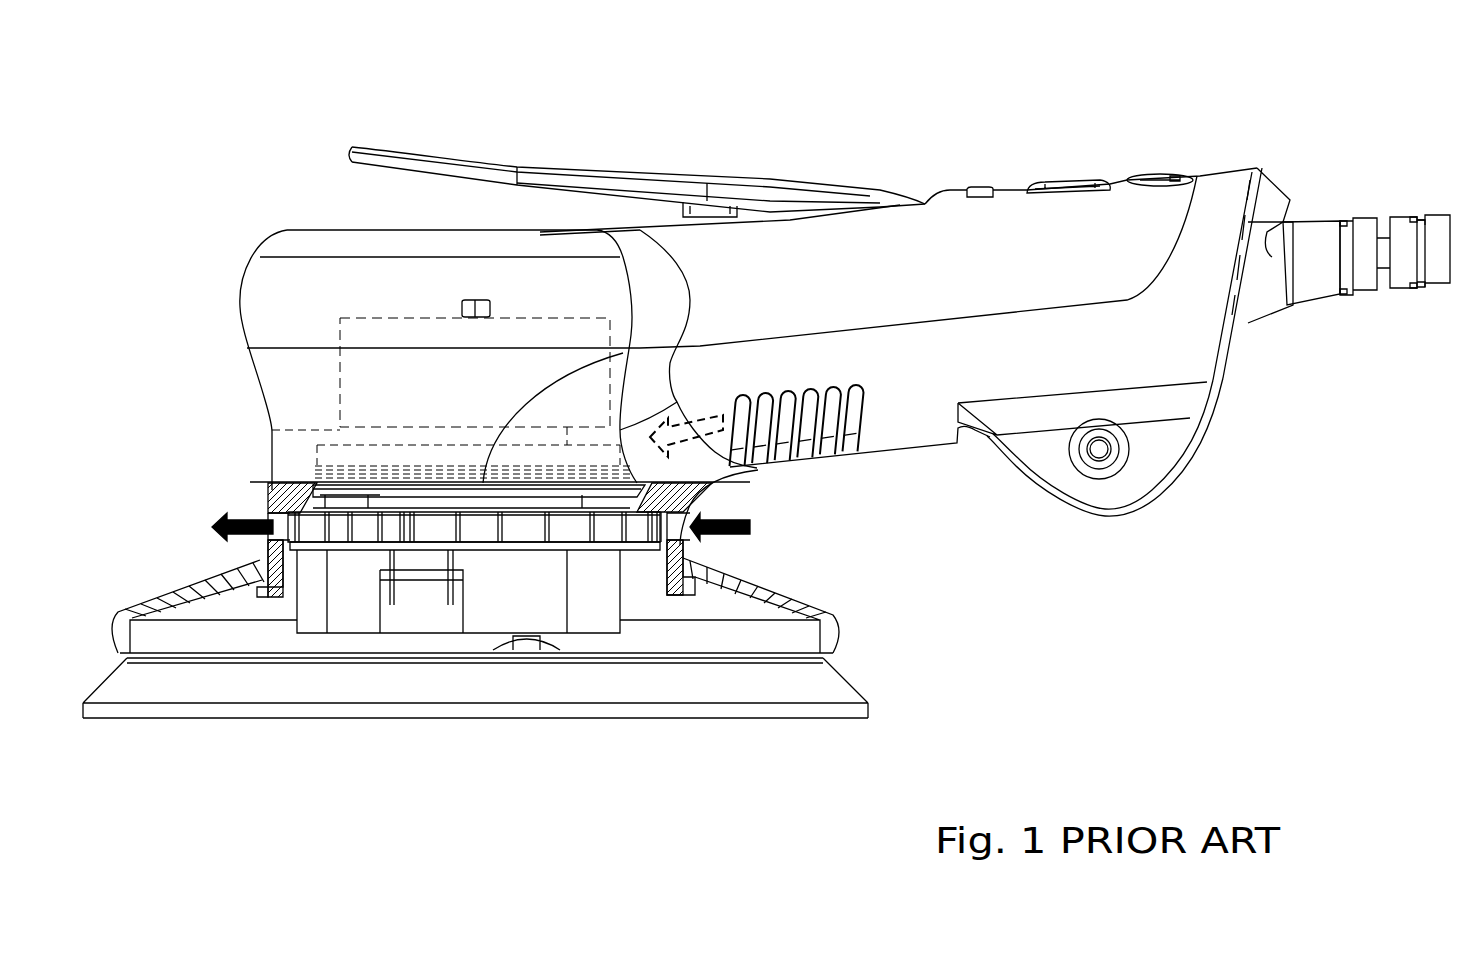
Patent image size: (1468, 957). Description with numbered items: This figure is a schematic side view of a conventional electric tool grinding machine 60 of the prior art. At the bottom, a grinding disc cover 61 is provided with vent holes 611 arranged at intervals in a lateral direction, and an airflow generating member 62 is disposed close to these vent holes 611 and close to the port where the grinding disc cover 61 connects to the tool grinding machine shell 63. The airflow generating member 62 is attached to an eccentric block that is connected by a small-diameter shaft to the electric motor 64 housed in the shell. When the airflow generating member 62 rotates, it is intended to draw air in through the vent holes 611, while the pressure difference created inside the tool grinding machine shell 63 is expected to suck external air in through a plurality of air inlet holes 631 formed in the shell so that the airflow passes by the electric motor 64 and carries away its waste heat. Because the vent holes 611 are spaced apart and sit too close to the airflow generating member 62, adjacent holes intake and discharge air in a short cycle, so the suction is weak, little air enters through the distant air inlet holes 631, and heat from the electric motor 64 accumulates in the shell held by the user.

The electric tool grinding machine 60 is at (933, 91).
The grinding disc cover 61 is at (160, 597).
The vent holes 611 is at (260, 518).
The airflow generating member 62 is at (520, 543).
The tool grinding machine shell 63 is at (288, 235).
The air inlet holes 631 is at (855, 433).
The electric motor 64 is at (541, 320).